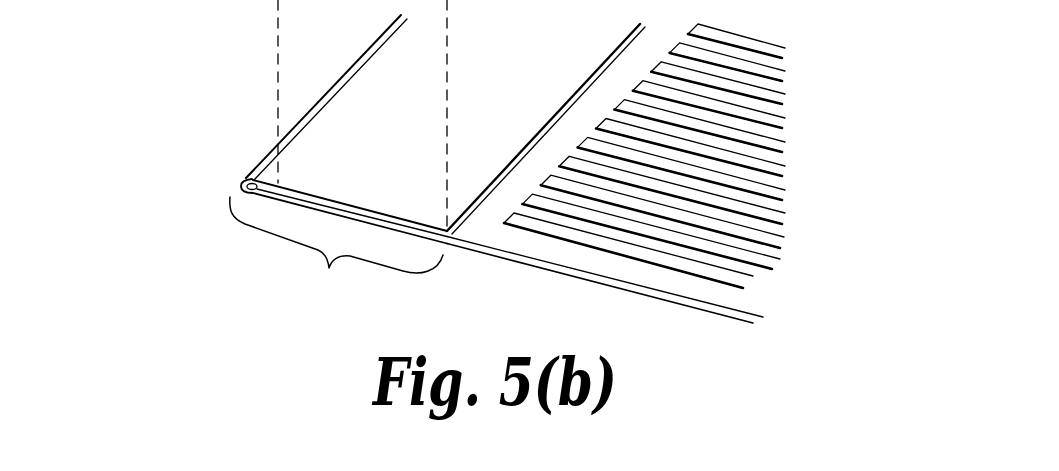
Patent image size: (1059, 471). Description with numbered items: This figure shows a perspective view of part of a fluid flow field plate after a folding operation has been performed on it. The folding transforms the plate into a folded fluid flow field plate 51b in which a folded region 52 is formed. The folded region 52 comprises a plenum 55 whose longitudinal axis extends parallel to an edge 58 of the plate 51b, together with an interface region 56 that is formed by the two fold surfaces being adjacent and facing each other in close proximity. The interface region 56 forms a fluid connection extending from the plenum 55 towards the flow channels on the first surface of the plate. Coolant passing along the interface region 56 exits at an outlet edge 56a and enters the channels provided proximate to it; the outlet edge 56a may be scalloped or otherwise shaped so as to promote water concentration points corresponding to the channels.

The folded fluid flow field plate 51b is at (608, 287).
The folded region 52 is at (328, 269).
The plenum 55 is at (243, 187).
The interface region 56 is at (340, 204).
The outlet edge 56a is at (481, 196).
The edge 58 is at (333, 86).